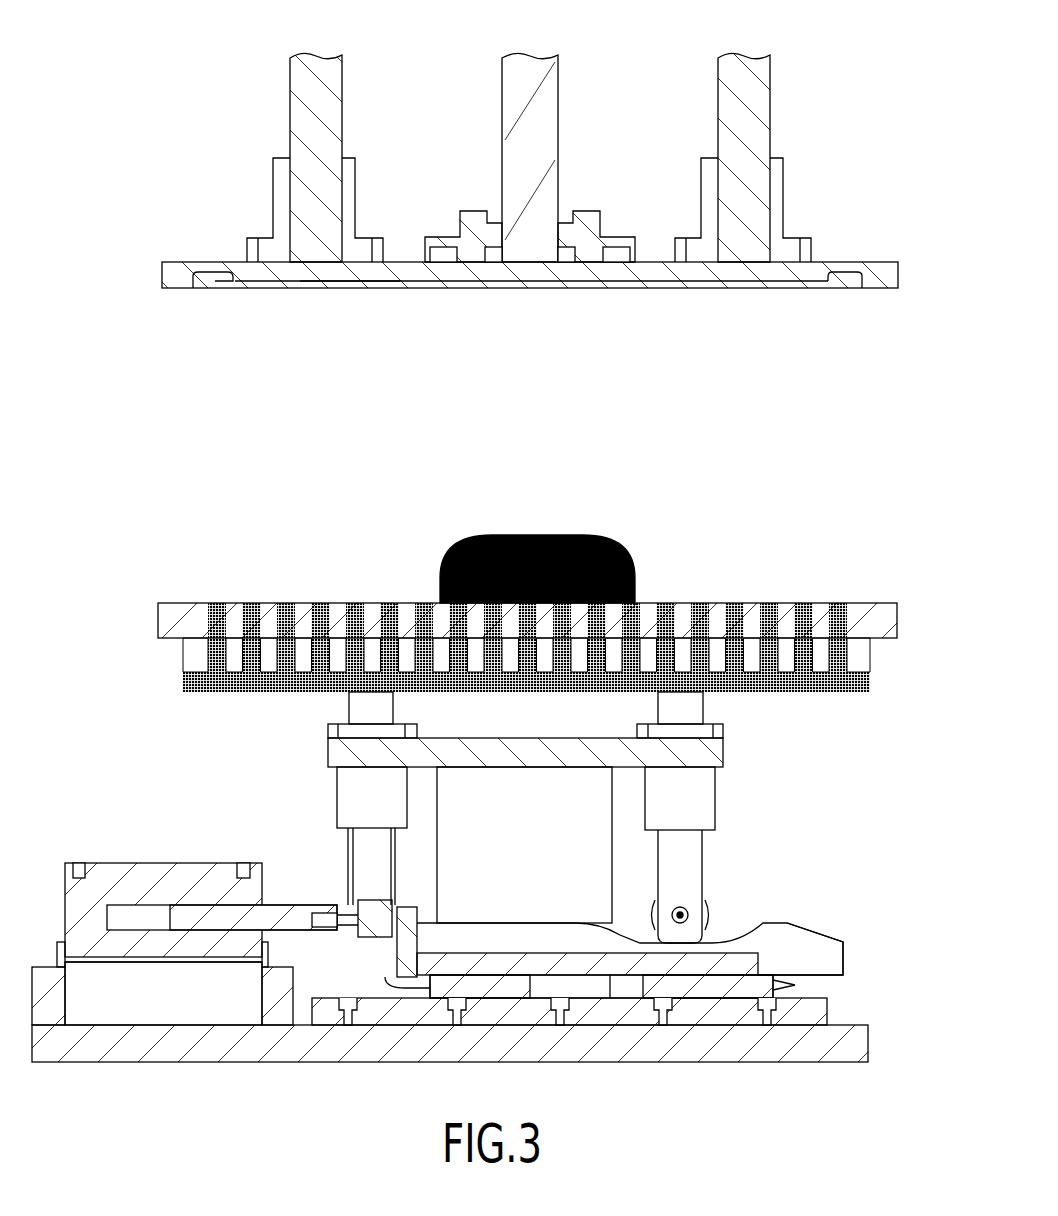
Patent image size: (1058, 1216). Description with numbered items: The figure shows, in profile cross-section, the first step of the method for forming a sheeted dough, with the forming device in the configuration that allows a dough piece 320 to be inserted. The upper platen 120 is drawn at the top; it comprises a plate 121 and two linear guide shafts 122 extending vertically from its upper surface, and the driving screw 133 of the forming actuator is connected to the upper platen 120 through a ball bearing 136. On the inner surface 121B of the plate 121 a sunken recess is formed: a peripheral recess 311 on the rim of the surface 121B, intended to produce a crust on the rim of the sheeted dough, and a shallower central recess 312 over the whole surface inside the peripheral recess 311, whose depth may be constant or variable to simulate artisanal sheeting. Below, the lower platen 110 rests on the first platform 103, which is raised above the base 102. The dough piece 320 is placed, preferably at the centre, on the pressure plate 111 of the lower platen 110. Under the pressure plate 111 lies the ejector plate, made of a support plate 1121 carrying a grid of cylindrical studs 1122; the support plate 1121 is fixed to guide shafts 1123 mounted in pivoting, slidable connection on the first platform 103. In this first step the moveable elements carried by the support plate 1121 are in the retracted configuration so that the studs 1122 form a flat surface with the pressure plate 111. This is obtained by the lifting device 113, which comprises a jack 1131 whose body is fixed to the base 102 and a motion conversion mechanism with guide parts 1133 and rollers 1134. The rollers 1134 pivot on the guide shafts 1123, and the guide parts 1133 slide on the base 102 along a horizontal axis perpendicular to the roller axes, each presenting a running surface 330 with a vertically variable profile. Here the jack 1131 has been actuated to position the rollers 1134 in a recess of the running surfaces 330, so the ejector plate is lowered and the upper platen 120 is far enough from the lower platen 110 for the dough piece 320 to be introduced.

The base 102 is at (868, 1040).
The first platform 103 is at (724, 752).
The lower platen 110 is at (155, 618).
The pressure plate 111 is at (897, 628).
The lifting device 113 is at (840, 1002).
The upper platen 120 is at (157, 268).
The plate 121 is at (895, 268).
The inner surface 121B is at (884, 293).
The linear guide shafts 122 is at (290, 88).
The driving screw 133 is at (558, 92).
The ball bearing 136 is at (600, 245).
The peripheral recess 311 is at (207, 285).
The central recess 312 is at (438, 290).
The dough piece 320 is at (612, 535).
The running surfaces 330 is at (540, 923).
The support plate 1121 is at (870, 690).
The studs 1122 is at (848, 660).
The guide shafts 1123 is at (703, 855).
The jack 1131 is at (128, 863).
The guide parts 1133 is at (842, 950).
The rollers 1134 is at (705, 920).